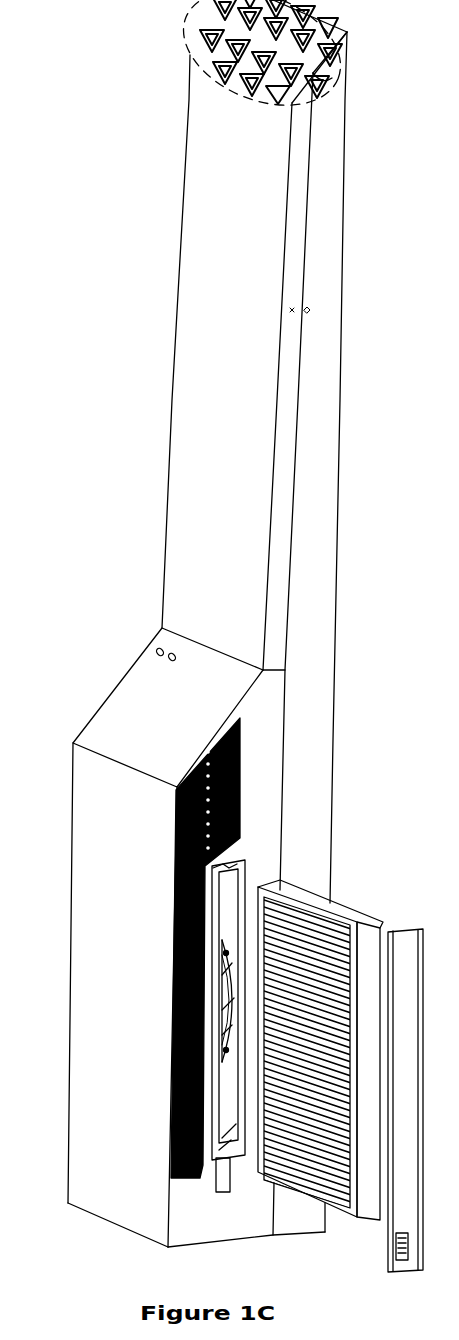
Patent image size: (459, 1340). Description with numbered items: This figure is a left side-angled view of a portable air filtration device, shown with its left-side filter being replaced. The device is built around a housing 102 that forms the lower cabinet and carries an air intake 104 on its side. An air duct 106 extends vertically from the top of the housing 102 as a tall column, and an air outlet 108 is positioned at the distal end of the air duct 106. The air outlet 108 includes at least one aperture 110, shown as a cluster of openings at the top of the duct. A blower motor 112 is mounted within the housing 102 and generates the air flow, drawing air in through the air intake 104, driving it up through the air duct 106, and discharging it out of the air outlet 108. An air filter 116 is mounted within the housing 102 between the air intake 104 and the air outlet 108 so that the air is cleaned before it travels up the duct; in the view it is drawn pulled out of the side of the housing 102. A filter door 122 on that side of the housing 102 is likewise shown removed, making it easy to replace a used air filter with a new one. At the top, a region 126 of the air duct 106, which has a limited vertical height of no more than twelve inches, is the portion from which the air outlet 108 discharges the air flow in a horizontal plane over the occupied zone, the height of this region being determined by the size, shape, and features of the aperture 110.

The housing 102 is at (113, 984).
The air intake 104 is at (175, 1033).
The air duct 106 is at (220, 422).
The air outlet 108 is at (158, 15).
The aperture 110 is at (230, 55).
The blower motor 112 is at (228, 955).
The air filter 116 is at (353, 965).
The filter door 122 is at (408, 970).
The region of the air duct 126 is at (320, 73).